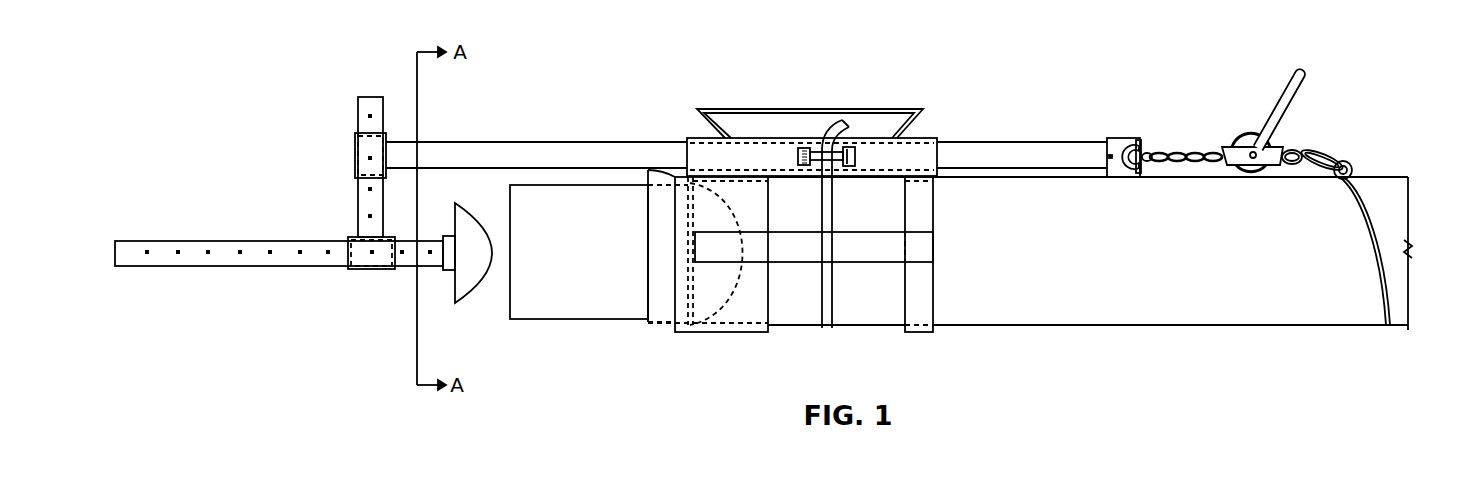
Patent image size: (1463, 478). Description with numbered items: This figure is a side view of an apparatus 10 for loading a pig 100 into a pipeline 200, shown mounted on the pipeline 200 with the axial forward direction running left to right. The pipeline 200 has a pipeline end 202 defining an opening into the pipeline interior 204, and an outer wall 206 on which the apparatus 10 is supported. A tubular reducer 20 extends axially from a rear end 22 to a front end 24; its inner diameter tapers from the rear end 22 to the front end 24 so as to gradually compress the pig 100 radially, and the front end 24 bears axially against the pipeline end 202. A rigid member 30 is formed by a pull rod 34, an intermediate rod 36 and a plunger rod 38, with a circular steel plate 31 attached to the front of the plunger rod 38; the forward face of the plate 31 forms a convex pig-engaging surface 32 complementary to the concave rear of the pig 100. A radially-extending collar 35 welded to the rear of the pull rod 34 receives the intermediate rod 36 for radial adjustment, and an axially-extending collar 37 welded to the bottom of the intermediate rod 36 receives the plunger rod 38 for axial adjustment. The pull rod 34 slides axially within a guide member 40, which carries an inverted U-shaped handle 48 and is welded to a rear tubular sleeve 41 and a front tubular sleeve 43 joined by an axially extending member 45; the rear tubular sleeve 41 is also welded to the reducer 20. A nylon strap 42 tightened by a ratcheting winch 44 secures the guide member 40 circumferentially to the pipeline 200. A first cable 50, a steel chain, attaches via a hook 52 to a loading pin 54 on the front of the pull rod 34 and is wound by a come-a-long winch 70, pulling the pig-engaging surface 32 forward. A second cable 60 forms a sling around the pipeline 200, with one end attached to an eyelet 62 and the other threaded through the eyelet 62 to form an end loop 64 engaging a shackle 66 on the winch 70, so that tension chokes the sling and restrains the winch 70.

The apparatus 10 is at (296, 79).
The tubular reducer 20 is at (678, 290).
The rear end 22 is at (648, 330).
The front end 24 is at (690, 330).
The rigid member 30 is at (273, 233).
The circular steel plate 31 is at (455, 283).
The pig-engaging surface 32 is at (481, 283).
The pull rod 34 is at (533, 142).
The radially-extending collar 35 is at (355, 149).
The intermediate rod 36 is at (357, 191).
The axially-extending collar 37 is at (361, 272).
The plunger rod 38 is at (219, 270).
The guide member 40 is at (933, 138).
The rear tubular sleeve 41 is at (765, 333).
The nylon strap 42 is at (832, 293).
The front tubular sleeve 43 is at (913, 335).
The ratcheting winch 44 is at (857, 157).
The axially extending member 45 is at (860, 232).
The inverted U-shaped handle 48 is at (815, 108).
The first cable 50 is at (1197, 145).
The hook 52 is at (1147, 150).
The loading pin 54 is at (1135, 138).
The second cable 60 is at (1378, 238).
The eyelet 62 is at (1355, 161).
The end loop 64 is at (1325, 152).
The shackle 66 is at (1296, 150).
The winch 70 is at (1262, 145).
The pig 100 is at (510, 187).
The pipeline 200 is at (1088, 276).
The pipeline end 202 is at (700, 320).
The pipeline interior 204 is at (1400, 198).
The outer wall 206 is at (1120, 264).